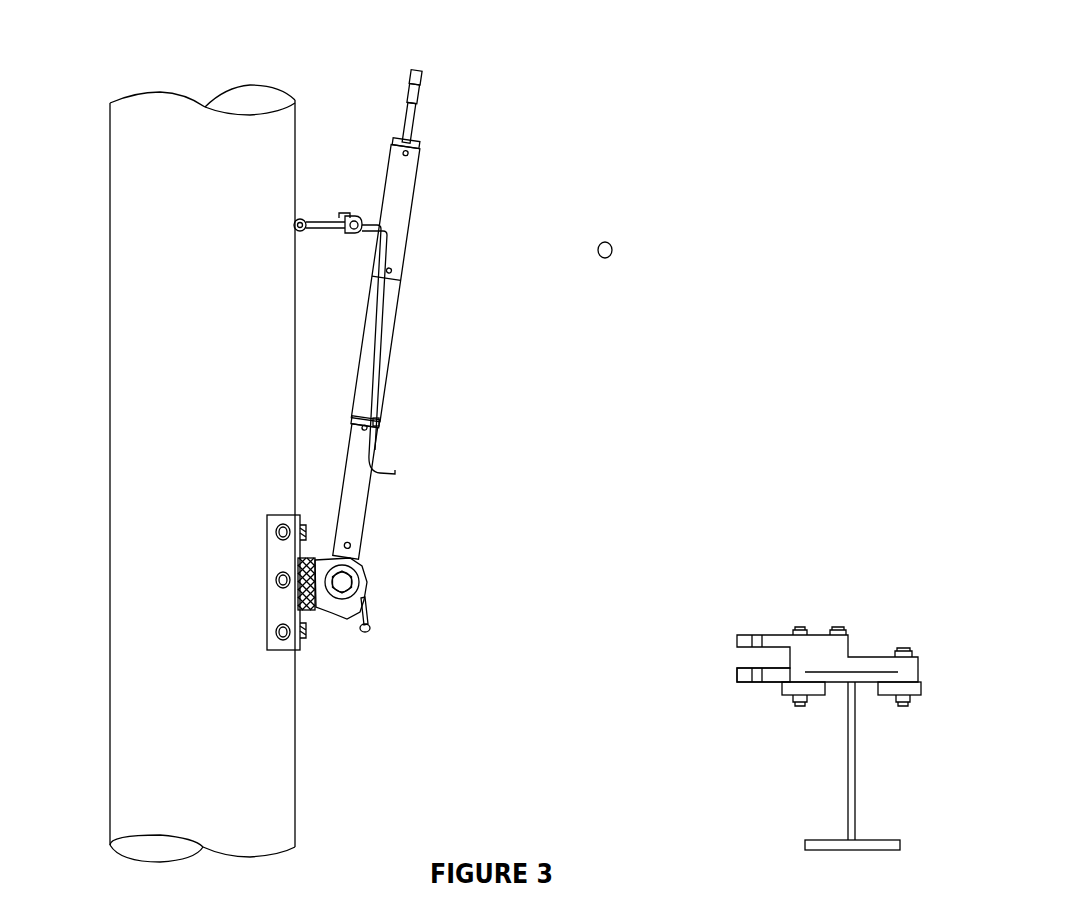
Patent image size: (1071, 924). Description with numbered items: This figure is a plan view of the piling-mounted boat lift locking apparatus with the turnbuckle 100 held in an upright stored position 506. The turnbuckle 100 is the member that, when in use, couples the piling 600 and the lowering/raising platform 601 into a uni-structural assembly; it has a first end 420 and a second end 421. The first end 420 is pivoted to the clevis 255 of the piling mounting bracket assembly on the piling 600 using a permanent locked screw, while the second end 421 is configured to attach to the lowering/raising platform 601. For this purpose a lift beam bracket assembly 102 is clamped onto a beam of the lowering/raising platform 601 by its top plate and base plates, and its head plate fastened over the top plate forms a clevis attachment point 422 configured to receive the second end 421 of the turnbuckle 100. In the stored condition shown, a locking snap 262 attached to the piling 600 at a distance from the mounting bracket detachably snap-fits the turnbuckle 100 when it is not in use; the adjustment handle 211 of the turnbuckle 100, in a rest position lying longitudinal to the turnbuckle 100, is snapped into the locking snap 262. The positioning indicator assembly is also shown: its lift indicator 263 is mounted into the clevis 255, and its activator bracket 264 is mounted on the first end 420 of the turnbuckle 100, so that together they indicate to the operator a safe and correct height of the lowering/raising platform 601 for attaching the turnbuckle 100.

The turnbuckle 100 is at (418, 188).
The lift beam bracket assembly 102 is at (818, 636).
The adjustment handle 211 is at (383, 302).
The clevis 255 is at (360, 573).
The locking snap 262 is at (328, 222).
The lift indicator 263 is at (311, 612).
The activator bracket 264 is at (370, 612).
The first end 420 is at (365, 590).
The second end 421 is at (424, 80).
The clevis attachment point 422 is at (737, 674).
The upright stored position 506 is at (604, 231).
The piling 600 is at (110, 222).
The lowering/raising platform 601 is at (848, 765).